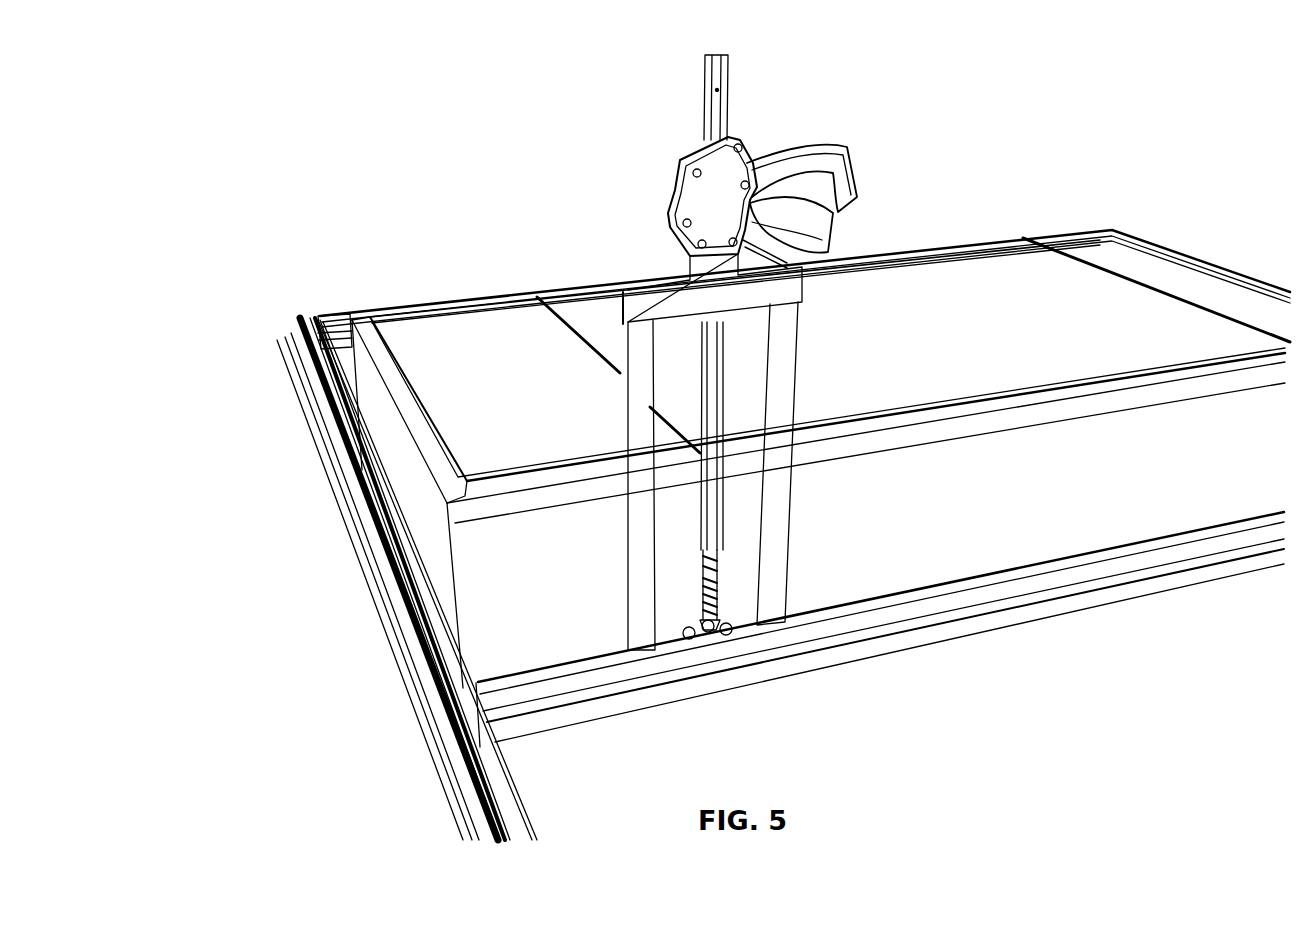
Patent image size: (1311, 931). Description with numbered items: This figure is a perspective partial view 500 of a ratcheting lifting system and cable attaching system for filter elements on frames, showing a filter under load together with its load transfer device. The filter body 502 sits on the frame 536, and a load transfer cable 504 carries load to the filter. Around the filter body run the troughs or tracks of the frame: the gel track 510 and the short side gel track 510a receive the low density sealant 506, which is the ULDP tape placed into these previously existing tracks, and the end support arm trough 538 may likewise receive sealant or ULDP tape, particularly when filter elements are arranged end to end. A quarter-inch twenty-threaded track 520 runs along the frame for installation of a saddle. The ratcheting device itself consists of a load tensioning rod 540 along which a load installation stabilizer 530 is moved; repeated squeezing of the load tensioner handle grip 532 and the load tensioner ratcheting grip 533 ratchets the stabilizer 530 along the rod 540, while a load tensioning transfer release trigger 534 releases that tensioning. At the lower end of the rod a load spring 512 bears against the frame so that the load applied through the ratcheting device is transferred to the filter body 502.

The filter under load and load transfer device 500 is at (532, 228).
The filter body 502 is at (1010, 307).
The load transfer cable 504 is at (1155, 285).
The low density sealant 506 is at (470, 697).
The gel track with low density sealant 510 is at (395, 607).
The gel track with low density sealant 510a is at (468, 746).
The load spring 512 is at (700, 583).
The quarter-inch twenty-threaded track 520 is at (322, 397).
The load installation stabilizer 530 is at (617, 348).
The load tensioner handle grip 532 is at (850, 162).
The load tensioner ratcheting grip 533 is at (837, 215).
The load tensioning transfer release trigger 534 is at (790, 262).
The frame 536 is at (338, 314).
The end support arm trough 538 is at (322, 327).
The load tensioning rod 540 is at (732, 107).